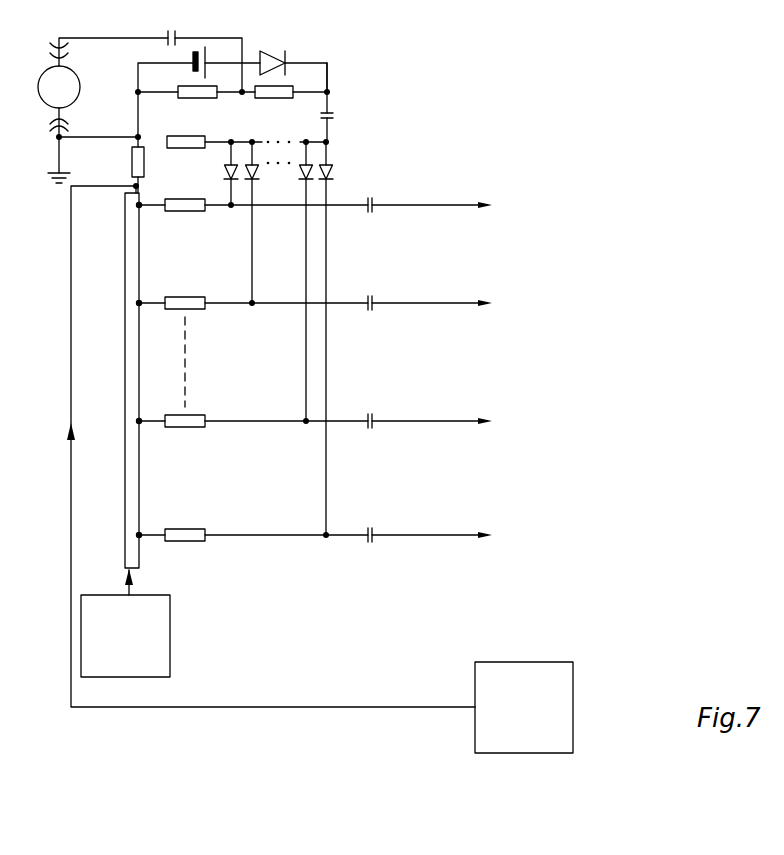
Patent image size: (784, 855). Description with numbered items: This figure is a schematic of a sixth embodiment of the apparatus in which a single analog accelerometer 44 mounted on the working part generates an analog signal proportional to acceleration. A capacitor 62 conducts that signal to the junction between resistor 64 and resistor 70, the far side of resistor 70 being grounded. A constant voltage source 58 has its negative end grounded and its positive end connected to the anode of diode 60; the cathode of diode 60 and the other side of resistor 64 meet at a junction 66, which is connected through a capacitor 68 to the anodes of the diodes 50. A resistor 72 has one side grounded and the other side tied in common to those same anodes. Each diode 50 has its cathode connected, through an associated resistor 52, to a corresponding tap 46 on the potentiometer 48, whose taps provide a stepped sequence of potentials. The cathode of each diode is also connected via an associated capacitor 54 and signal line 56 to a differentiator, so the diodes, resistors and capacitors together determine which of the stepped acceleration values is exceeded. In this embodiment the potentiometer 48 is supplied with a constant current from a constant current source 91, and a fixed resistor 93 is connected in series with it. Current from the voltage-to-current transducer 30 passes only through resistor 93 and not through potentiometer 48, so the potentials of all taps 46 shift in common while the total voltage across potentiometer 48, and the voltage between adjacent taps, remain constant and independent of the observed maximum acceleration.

The voltage-to-current transducer 30 is at (517, 678).
The analog accelerometer 44 is at (76, 92).
The tap 46 is at (141, 206).
The potentiometer 48 is at (124, 373).
The diode 50 is at (224, 172).
The resistor 52 is at (177, 198).
The capacitor 54 is at (377, 197).
The signal line 56 is at (381, 209).
The constant voltage source 58 is at (216, 50).
The diode 60 is at (273, 51).
The capacitor 62 is at (167, 37).
The resistor 64 is at (285, 90).
The junction 66 is at (327, 91).
The capacitor 68 is at (332, 113).
The resistor 70 is at (202, 88).
The resistor 72 is at (182, 130).
The constant current source 91 is at (147, 643).
The fixed resistor 93 is at (130, 157).